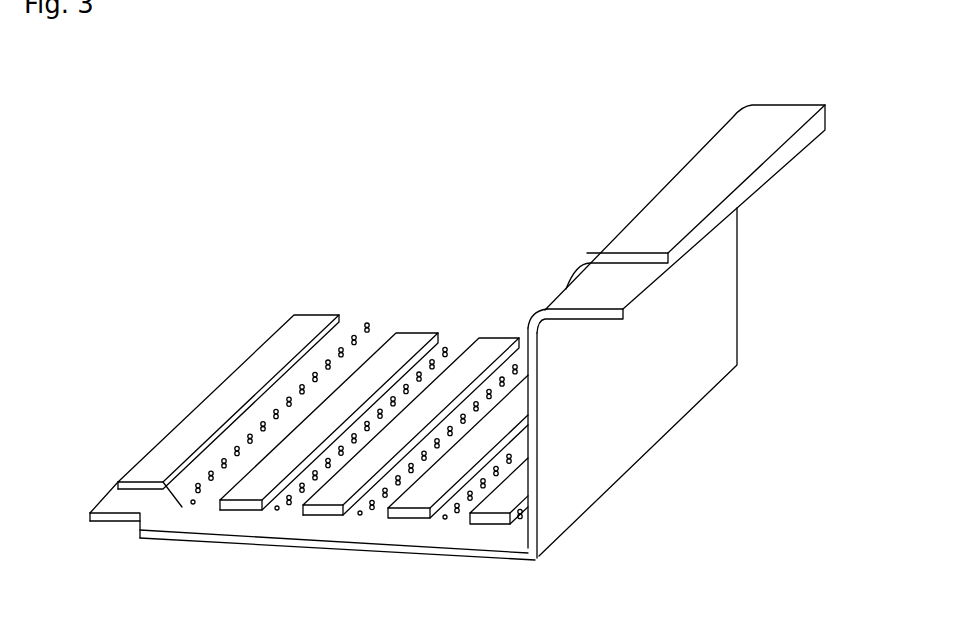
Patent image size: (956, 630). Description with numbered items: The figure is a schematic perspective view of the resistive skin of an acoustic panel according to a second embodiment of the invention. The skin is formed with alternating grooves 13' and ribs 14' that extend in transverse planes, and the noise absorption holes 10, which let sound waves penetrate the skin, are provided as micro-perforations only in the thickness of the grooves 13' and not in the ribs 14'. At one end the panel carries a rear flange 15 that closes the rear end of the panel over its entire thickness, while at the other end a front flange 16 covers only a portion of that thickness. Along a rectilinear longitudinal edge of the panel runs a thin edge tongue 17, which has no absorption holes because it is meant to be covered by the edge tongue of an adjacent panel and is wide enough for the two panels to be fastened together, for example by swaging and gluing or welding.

The noise absorption holes 10 is at (384, 330).
The ribs 14' is at (374, 382).
The grooves 13' is at (665, 219).
The rear flange 15 is at (650, 432).
The front flange 16 is at (152, 530).
The edge tongue 17 is at (443, 535).